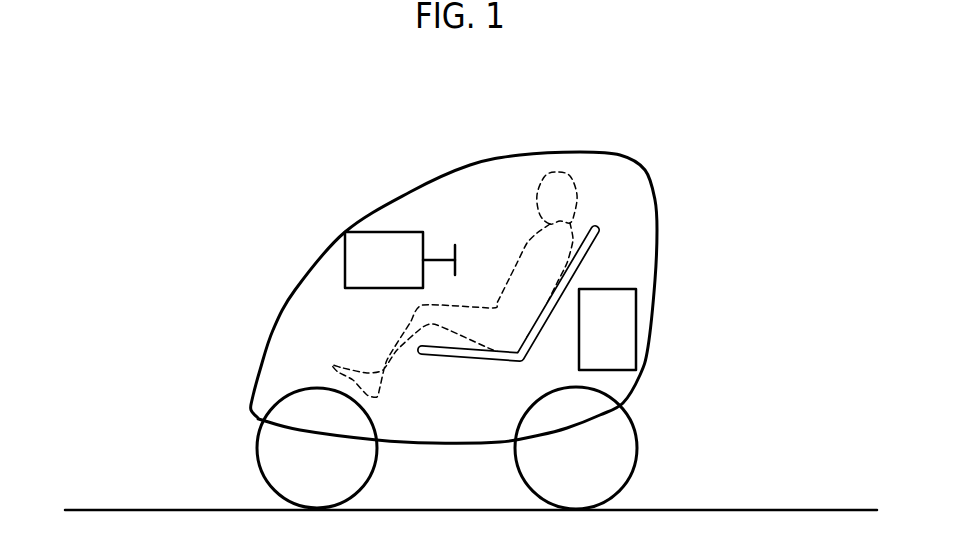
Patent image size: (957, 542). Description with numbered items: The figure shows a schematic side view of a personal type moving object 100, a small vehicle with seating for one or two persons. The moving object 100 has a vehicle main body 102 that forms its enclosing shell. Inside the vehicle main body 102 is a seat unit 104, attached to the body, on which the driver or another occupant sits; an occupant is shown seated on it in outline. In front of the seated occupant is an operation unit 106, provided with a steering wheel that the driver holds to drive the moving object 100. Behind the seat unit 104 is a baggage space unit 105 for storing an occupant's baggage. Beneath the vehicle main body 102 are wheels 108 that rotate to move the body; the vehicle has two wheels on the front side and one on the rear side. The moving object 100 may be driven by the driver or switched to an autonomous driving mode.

The personal type moving object 100 is at (549, 125).
The vehicle main body 102 is at (412, 186).
The seat unit 104 is at (576, 271).
The baggage space unit 105 is at (636, 330).
The operation unit 106 is at (348, 258).
The wheels 108 is at (255, 450).